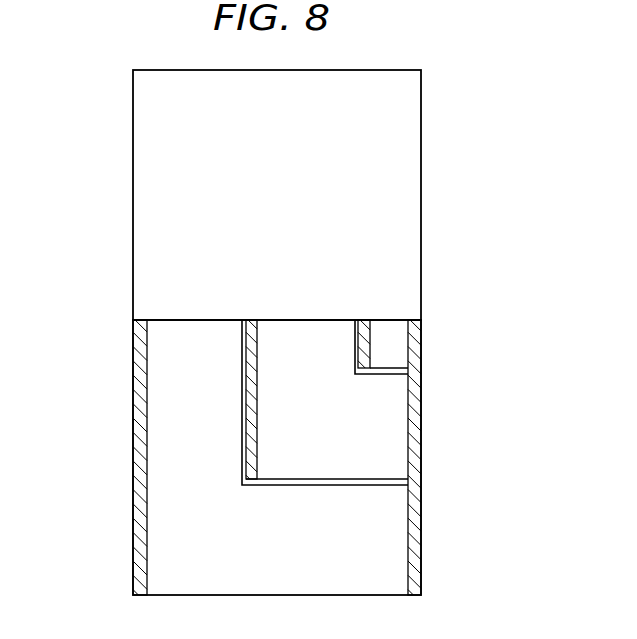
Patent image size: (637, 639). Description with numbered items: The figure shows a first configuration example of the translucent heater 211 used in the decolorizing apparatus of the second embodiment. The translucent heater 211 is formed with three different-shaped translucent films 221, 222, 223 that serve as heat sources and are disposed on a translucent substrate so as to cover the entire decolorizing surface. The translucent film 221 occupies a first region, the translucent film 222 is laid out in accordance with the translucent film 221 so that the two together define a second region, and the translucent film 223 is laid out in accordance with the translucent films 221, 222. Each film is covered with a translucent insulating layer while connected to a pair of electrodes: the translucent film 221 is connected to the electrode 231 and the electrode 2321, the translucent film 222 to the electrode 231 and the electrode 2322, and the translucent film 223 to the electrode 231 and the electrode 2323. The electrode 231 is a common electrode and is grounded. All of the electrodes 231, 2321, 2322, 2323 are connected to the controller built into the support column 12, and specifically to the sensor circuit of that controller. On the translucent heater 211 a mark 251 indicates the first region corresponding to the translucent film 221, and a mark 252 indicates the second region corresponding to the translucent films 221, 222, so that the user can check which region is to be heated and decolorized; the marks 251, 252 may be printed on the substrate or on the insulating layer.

The support column 12 is at (142, 194).
The translucent heater 211 is at (118, 320).
The electrode 2321 is at (363, 320).
The electrode 2322 is at (247, 320).
The electrode 2323 is at (139, 320).
The electrode 231 is at (415, 326).
The translucent film 221 is at (398, 342).
The translucent film 222 is at (390, 433).
The translucent film 223 is at (390, 540).
The mark 251 is at (400, 372).
The mark 252 is at (300, 485).